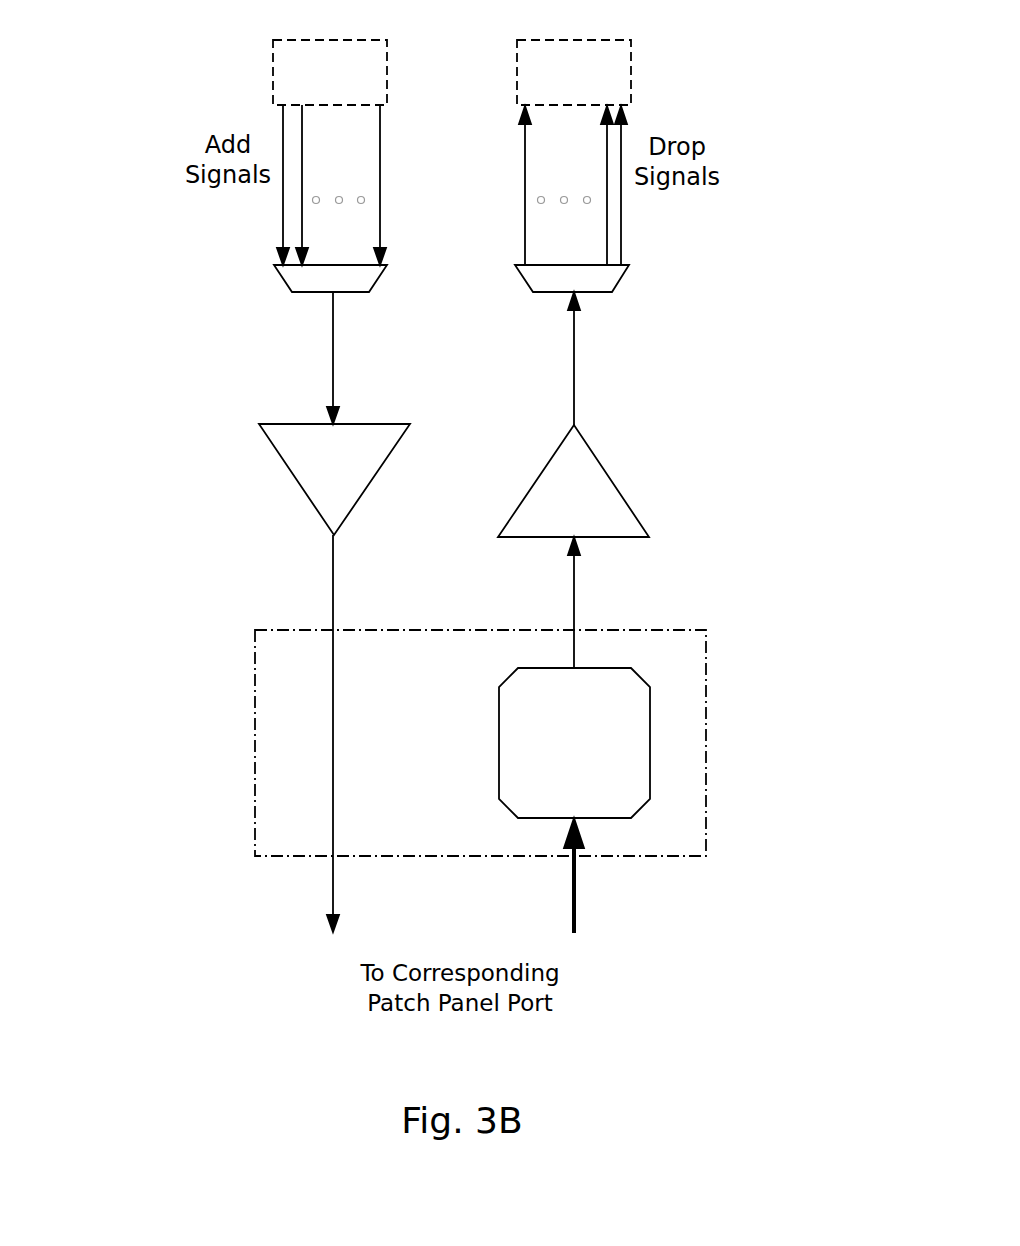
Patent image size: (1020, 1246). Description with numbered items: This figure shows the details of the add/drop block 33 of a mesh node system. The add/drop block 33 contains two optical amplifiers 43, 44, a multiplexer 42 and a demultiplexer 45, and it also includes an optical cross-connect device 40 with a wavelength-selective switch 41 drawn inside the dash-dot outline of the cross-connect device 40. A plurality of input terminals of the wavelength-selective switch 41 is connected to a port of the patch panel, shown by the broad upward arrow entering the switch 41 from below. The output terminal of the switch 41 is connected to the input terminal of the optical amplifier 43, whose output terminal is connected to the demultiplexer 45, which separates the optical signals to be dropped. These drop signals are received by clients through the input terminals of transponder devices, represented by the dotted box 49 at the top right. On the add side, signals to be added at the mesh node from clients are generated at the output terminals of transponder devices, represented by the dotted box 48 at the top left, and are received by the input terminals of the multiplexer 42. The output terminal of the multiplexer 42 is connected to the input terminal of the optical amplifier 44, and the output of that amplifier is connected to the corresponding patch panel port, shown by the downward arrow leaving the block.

The add/drop block 33 is at (118, 860).
The optical cross-connect device 40 is at (707, 800).
The wavelength-selective switch 41 is at (499, 724).
The multiplexer 42 is at (380, 277).
The optical amplifier 43 is at (604, 466).
The optical amplifier 44 is at (298, 483).
The demultiplexer 45 is at (620, 280).
The dotted box representing transponder devices (add side) 48 is at (273, 47).
The dotted box representing transponder devices (drop side) 49 is at (629, 54).